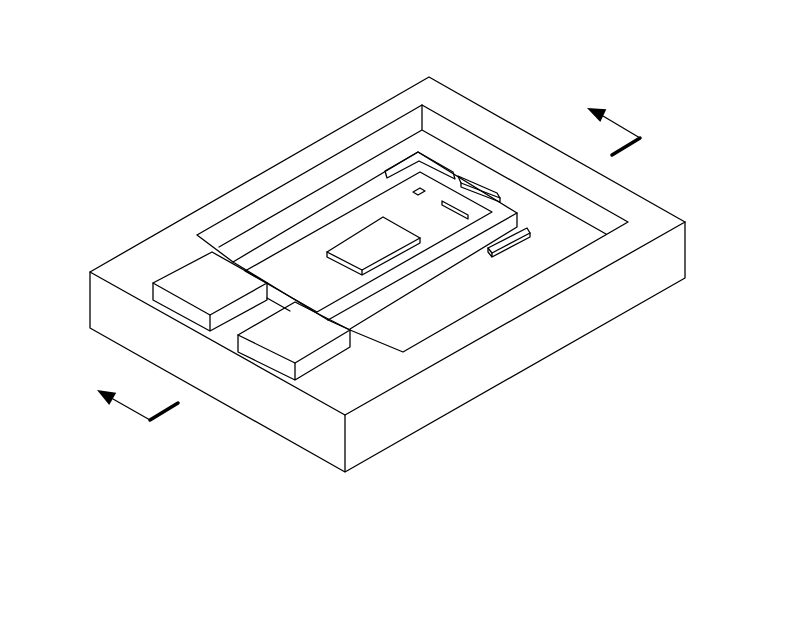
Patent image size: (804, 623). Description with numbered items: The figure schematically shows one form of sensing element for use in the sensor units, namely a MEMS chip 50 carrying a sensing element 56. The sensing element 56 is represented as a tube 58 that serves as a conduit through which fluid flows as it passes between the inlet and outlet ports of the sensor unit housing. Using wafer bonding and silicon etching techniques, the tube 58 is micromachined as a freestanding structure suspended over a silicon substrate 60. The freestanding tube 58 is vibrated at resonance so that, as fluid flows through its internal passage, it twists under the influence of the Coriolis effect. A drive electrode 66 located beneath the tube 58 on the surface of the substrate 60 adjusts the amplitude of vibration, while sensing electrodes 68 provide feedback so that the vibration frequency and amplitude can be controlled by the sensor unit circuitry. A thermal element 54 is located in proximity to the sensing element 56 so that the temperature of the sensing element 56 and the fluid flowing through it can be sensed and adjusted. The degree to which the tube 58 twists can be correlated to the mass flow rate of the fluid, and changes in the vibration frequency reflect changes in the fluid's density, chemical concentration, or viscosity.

The MEMS chip 50 is at (267, 129).
The thermal element 54 is at (362, 258).
The sensing element 56 is at (448, 285).
The tube 58 is at (360, 190).
The silicon substrate 60 is at (537, 350).
The drive electrode 66 is at (483, 186).
The sensing electrodes 68 is at (397, 160).